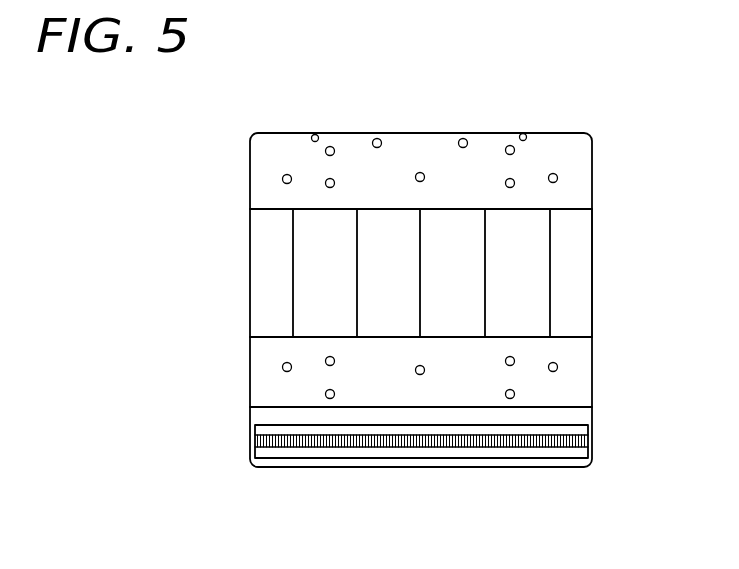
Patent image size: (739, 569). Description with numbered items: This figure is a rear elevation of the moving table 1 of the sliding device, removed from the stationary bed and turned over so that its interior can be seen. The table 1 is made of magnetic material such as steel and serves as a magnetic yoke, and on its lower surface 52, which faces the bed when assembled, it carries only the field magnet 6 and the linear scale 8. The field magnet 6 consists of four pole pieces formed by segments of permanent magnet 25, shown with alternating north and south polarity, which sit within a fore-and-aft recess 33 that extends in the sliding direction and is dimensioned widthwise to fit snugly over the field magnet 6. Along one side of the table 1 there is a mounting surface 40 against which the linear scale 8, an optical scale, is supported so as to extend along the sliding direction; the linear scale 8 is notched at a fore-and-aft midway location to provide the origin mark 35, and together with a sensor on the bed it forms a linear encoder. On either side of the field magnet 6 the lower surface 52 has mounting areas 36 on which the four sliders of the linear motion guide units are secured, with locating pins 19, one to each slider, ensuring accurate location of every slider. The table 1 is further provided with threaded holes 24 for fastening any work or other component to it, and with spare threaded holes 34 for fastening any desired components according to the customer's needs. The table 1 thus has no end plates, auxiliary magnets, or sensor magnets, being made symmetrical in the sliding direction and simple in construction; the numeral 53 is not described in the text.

The moving table 1 is at (580, 165).
The field magnet 6 is at (537, 251).
The linear scale 8 is at (535, 445).
The locating pins 19 is at (315, 136).
The threaded holes 24 is at (420, 176).
The permanent magnet segments 25 is at (310, 303).
The fore-and-aft recess 33 is at (580, 281).
The spare threaded holes 34 is at (378, 140).
The origin mark 35 is at (420, 455).
The mounting areas 36 is at (258, 175).
The mounting surface 40 is at (360, 455).
The lower surface 52 is at (472, 175).
The bore 53 is at (510, 394).